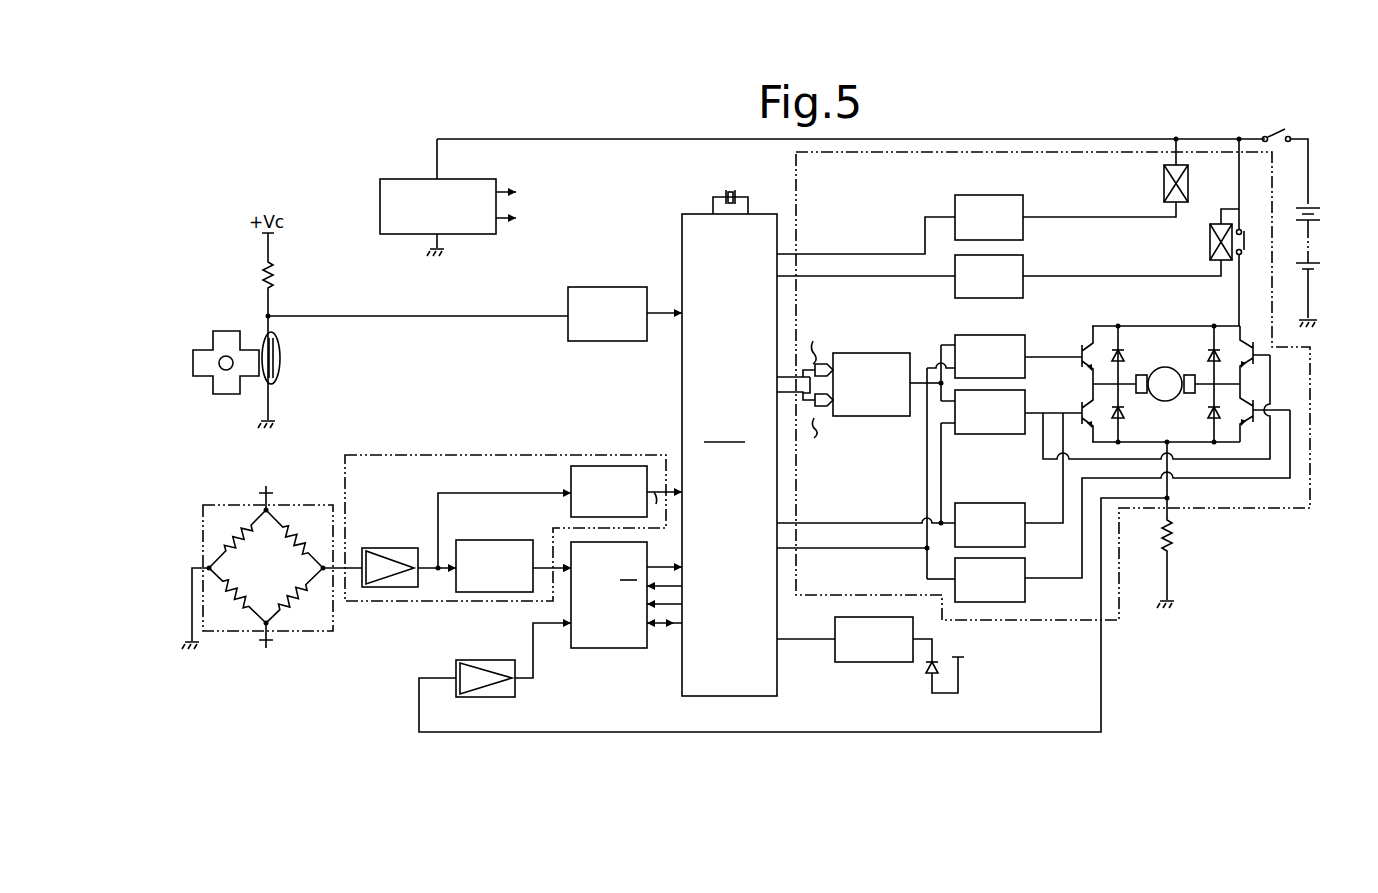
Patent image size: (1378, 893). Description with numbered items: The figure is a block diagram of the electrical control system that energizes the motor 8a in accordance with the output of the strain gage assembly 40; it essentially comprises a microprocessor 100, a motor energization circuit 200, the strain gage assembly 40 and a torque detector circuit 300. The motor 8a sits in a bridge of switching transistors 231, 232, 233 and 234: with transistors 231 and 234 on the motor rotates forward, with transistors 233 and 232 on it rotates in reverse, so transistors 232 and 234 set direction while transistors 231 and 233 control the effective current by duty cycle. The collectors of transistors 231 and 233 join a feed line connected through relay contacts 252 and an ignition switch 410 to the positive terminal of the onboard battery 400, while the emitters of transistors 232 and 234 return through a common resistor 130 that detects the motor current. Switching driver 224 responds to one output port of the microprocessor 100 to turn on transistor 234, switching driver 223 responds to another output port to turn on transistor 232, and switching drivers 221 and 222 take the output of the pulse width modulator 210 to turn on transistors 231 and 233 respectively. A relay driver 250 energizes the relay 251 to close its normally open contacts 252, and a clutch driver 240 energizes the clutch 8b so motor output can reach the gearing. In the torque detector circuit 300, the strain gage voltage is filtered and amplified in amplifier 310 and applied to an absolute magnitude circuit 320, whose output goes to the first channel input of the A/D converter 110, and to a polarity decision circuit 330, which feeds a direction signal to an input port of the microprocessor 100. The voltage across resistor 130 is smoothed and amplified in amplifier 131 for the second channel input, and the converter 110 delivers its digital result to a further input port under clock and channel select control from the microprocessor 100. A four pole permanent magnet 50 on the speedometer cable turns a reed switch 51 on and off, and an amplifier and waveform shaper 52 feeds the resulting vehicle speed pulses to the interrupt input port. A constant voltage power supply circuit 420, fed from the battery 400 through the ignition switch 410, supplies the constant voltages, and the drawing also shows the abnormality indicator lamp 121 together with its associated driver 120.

The motor 8a is at (1171, 366).
The clutch 8b is at (1162, 196).
The strain gage assembly 40 is at (309, 632).
The four pole permanent magnet 50 is at (221, 395).
The reed switch 51 is at (282, 362).
The amplifier and waveform shaper 52 is at (603, 342).
The microprocessor (CPU) 100 is at (682, 243).
The A/D converter 110 is at (602, 649).
The drive circuit 120 is at (857, 663).
The abnormality indicator lamp 121 is at (919, 675).
The common resistor 130 is at (1174, 537).
The amplifier 131 is at (515, 692).
The motor energization circuit 200 is at (1012, 622).
The pulse width modulator 210 is at (872, 416).
The switching driver 221 is at (1011, 336).
The switching driver 222 is at (993, 435).
The switching driver 223 is at (1001, 504).
The switching driver 224 is at (1025, 596).
The switching transistor 231 is at (1078, 352).
The switching transistor 232 is at (1078, 409).
The switching transistor 233 is at (1258, 342).
The switching transistor 234 is at (1260, 423).
The clutch driver 240 is at (1003, 196).
The relay driver 250 is at (1023, 259).
The relay 251 is at (1210, 250).
The relay contacts 252 is at (1244, 234).
The torque detector circuit 300 is at (430, 453).
The amplifier 310 is at (393, 548).
The absolute magnitude circuit 320 is at (501, 540).
The polarity decision circuit 330 is at (571, 487).
The onboard battery 400 is at (1323, 256).
The ignition switch 410 is at (1285, 131).
The constant voltage power supply circuit 420 is at (384, 237).